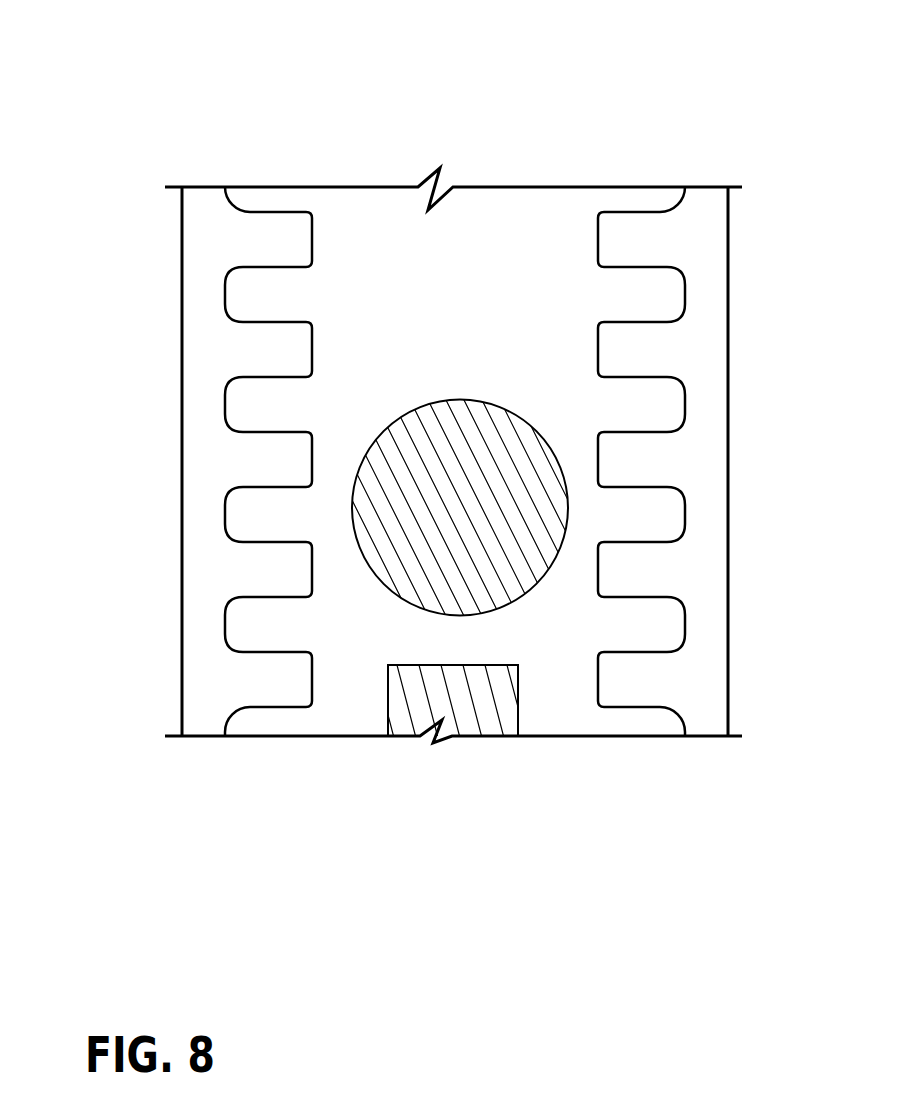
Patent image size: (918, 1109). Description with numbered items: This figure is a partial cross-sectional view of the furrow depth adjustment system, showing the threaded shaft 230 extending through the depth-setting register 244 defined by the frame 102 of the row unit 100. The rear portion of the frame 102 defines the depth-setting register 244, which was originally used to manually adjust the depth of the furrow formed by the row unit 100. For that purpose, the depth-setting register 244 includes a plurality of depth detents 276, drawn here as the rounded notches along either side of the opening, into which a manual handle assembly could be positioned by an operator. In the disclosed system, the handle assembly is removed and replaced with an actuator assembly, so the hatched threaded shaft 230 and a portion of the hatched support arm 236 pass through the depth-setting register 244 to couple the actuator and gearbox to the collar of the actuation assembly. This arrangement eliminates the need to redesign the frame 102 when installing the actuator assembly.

The row unit 100 is at (255, 115).
The frame 102 is at (182, 453).
The depth-setting register 244 is at (472, 284).
The depth detents 276 is at (290, 293).
The threaded shaft 230 is at (418, 437).
The support arm 236 is at (490, 705).